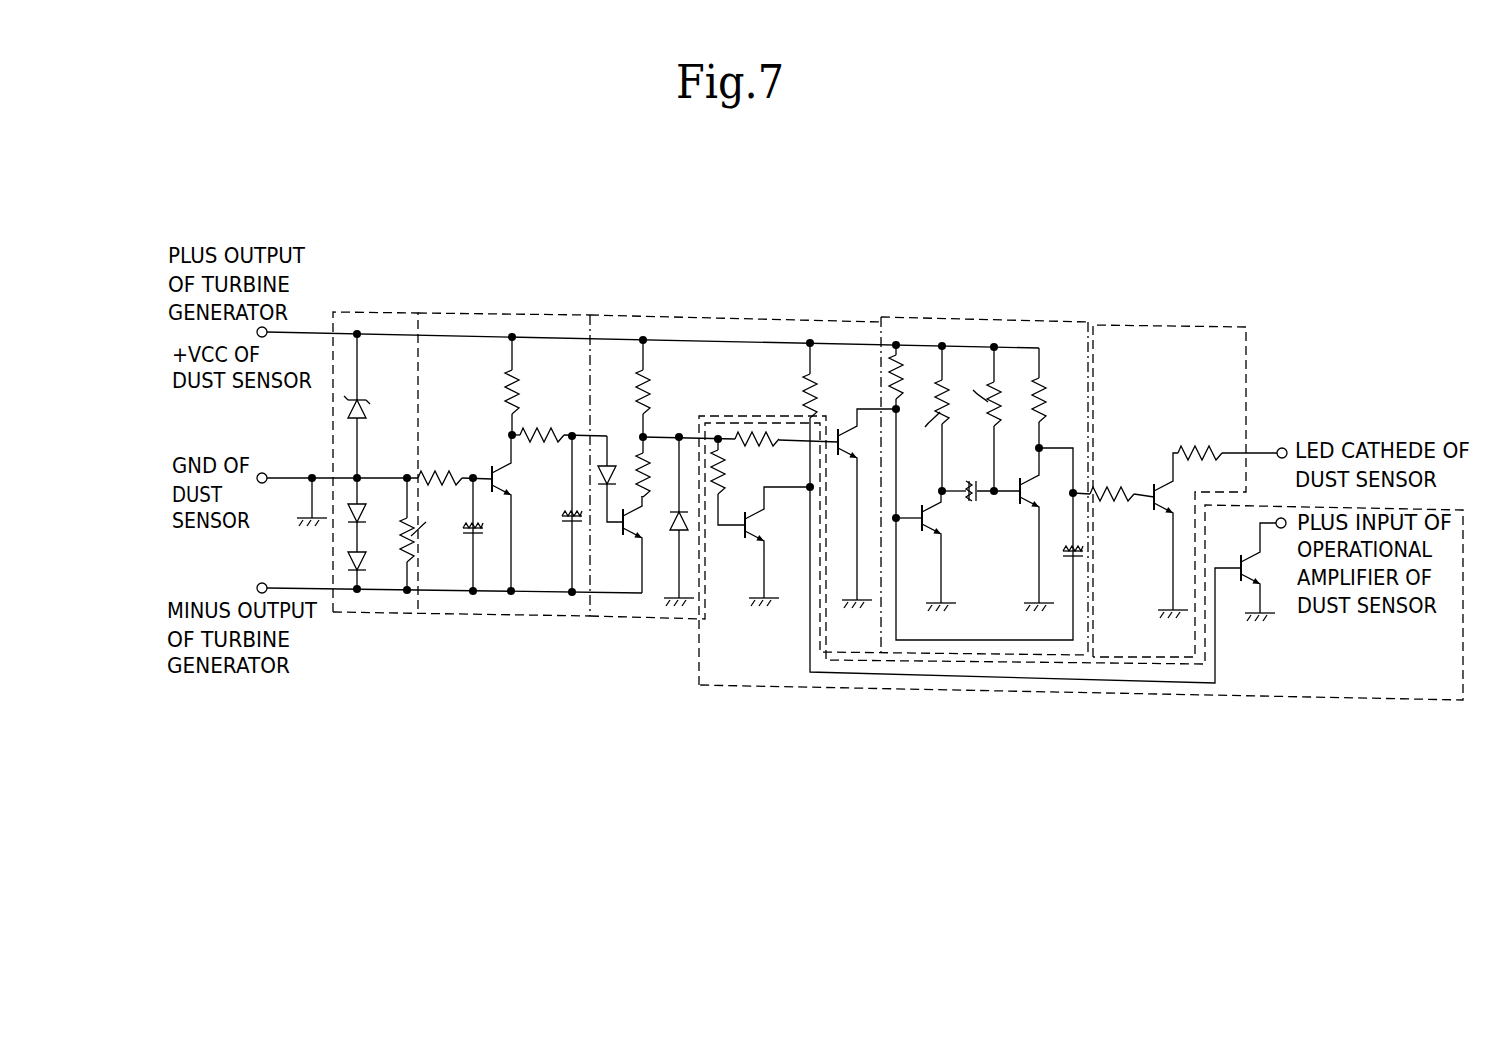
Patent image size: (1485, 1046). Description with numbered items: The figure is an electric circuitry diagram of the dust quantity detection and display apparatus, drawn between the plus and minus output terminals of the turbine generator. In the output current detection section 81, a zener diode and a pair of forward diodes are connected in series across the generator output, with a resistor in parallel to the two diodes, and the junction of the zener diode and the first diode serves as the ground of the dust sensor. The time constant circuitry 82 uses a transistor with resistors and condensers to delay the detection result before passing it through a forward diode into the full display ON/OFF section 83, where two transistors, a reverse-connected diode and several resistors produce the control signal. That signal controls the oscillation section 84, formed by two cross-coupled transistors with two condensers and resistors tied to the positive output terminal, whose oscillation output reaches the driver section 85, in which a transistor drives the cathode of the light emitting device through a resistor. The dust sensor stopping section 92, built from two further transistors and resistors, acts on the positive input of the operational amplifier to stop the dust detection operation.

The output current detection section 81 is at (372, 318).
The time constant circuitry 82 is at (500, 321).
The full display ON/OFF section 83 is at (740, 323).
The oscillation section 84 is at (1030, 332).
The driver section 85 is at (1213, 348).
The dust sensor stopping section 92 is at (1385, 693).